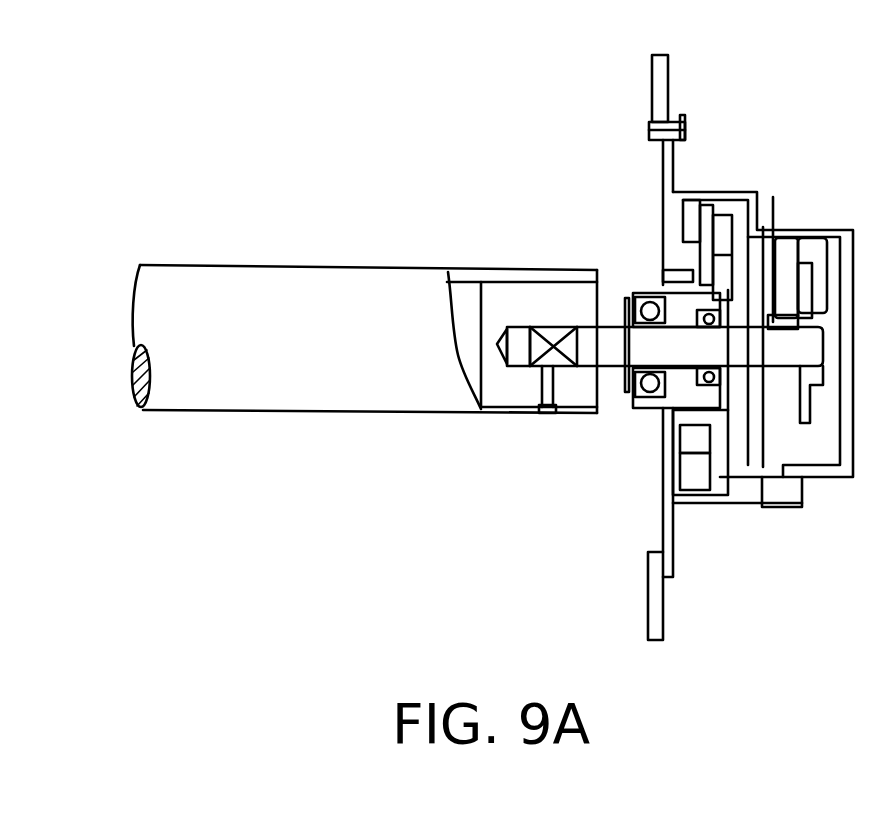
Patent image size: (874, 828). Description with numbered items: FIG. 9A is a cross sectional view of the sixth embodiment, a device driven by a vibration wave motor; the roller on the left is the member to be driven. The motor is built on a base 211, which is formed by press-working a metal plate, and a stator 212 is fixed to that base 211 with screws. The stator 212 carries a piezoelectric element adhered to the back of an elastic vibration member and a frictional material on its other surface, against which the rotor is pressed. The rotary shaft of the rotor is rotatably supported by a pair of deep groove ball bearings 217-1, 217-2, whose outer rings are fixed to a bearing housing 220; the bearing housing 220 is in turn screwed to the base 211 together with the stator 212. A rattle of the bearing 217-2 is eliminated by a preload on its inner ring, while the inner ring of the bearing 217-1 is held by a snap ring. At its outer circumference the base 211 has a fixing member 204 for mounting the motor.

The fixing member 204 is at (668, 165).
The base 211 is at (660, 215).
The bearing housing 220 is at (680, 295).
The deep groove ball bearing 217-1 is at (637, 407).
The deep groove ball bearing 217-2 is at (677, 427).
The stator 212 is at (695, 508).